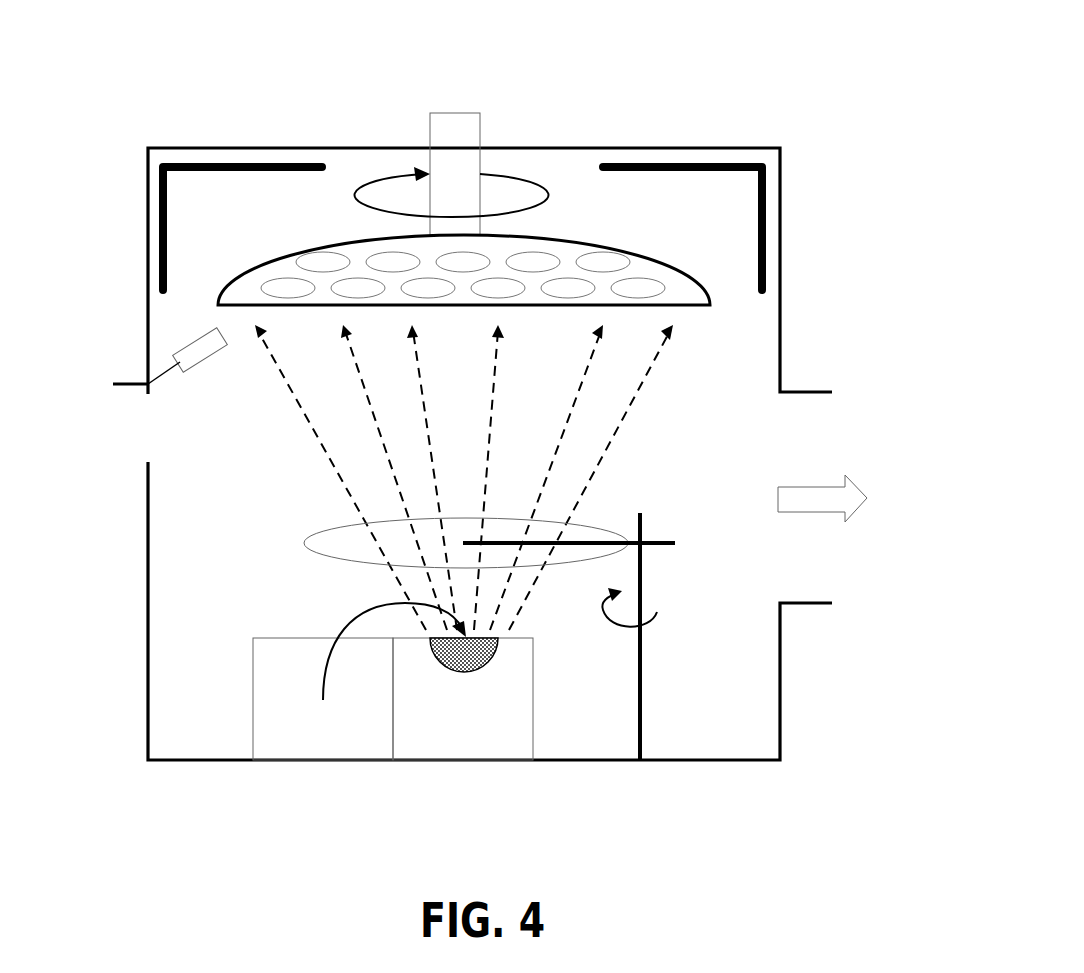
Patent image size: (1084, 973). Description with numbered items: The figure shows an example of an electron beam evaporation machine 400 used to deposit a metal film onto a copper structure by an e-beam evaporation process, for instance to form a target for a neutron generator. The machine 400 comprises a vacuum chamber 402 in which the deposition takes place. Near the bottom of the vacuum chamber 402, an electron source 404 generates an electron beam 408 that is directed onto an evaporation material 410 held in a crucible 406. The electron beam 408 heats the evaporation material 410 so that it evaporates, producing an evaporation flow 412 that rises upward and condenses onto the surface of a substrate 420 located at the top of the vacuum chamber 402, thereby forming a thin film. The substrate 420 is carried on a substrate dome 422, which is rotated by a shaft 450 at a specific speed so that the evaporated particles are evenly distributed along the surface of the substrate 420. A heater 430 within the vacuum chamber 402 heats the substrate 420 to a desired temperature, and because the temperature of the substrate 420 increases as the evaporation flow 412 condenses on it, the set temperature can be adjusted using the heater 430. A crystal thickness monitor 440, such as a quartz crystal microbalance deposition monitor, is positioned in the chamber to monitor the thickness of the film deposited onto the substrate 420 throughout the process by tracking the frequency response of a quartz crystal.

The electron beam evaporation machine 400 is at (158, 58).
The vacuum chamber 402 is at (603, 148).
The electron source 404 is at (343, 739).
The crucible 406 is at (482, 739).
The electron beam 408 is at (345, 628).
The evaporation material 410 is at (463, 655).
The evaporation flow 412 is at (572, 409).
The substrate 420 is at (603, 262).
The substrate dome 422 is at (542, 286).
The heater 430 is at (765, 190).
The crystal thickness monitor 440 is at (205, 360).
The shaft 450 is at (480, 115).